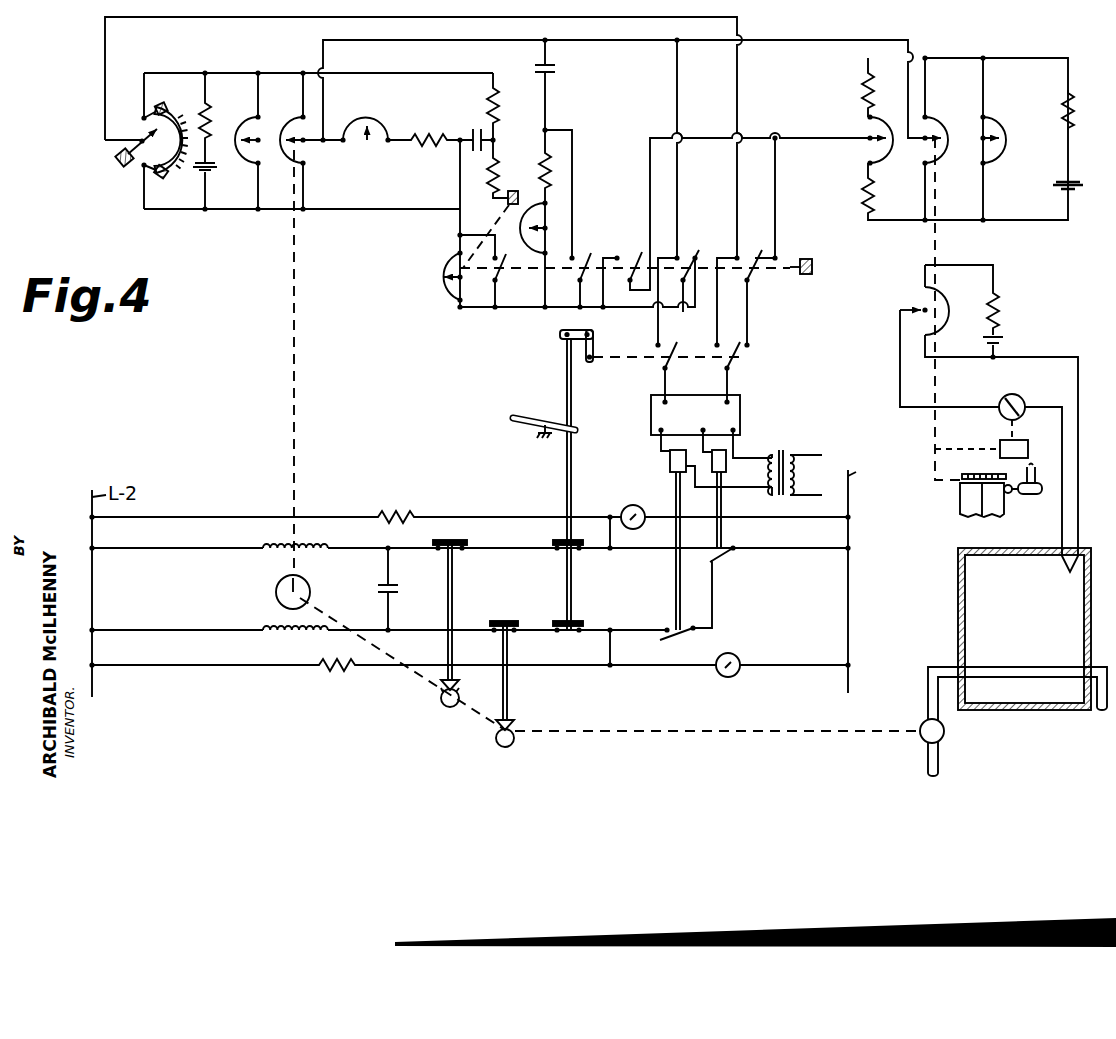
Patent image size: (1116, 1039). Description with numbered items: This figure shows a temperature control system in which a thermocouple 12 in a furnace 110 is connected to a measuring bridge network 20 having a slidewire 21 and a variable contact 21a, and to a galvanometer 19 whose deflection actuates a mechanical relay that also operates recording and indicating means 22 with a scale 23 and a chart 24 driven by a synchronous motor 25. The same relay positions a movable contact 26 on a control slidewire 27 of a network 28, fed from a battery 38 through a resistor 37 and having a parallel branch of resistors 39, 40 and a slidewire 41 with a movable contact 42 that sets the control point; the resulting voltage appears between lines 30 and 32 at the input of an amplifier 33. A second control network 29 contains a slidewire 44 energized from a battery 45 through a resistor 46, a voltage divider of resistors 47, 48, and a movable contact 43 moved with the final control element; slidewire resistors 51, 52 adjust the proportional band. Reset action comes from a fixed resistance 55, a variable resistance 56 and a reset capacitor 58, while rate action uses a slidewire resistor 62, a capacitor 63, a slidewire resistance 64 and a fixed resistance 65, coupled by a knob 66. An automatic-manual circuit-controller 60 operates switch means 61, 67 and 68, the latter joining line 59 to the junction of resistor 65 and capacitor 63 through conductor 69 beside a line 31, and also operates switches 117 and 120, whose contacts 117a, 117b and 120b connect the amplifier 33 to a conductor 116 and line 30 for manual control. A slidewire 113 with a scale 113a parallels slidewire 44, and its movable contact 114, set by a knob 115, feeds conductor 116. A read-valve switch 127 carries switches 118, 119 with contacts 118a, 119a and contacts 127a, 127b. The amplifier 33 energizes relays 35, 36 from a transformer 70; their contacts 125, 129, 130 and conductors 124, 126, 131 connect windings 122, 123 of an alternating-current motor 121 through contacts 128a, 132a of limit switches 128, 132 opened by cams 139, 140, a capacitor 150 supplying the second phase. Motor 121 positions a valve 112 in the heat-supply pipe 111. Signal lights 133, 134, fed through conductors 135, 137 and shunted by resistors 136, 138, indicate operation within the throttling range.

The thermocouple 12 is at (1073, 568).
The galvanometer 19 is at (1022, 398).
The balanceable network 20 is at (1001, 391).
The slidewire 21 is at (946, 304).
The variable contact 21a is at (942, 326).
The recording and indicating means 22 is at (981, 438).
The scale 23 is at (972, 474).
The chart 24 is at (962, 500).
The synchronous motor 25 is at (1038, 482).
The movable contact 26 is at (942, 146).
The control slidewire 27 is at (940, 122).
The network 28 is at (995, 123).
The second control network 29 is at (317, 125).
The line 30 is at (800, 40).
The conductor 31 is at (640, 309).
The line 32 is at (810, 136).
The amplifier 33 is at (695, 415).
The relay 35 is at (670, 461).
The relay 36 is at (727, 452).
The resistor 37 is at (1075, 112).
The battery 38 is at (1073, 180).
The resistor 39 is at (864, 92).
The resistor 40 is at (874, 202).
The slidewire 41 is at (893, 124).
The movable contact 42 is at (878, 142).
The movable contact 43 is at (296, 134).
The slidewire 44 is at (301, 116).
The battery 45 is at (214, 170).
The resistor 46 is at (212, 128).
The resistor 47 is at (499, 92).
The resistor 48 is at (493, 180).
The slidewire resistor 51 is at (1004, 122).
The slidewire resistor 52 is at (252, 122).
The fixed resistance 55 is at (428, 146).
The variable resistance 56 is at (386, 128).
The reset capacitor 58 is at (474, 128).
The line 59 is at (460, 194).
The circuit-controller 60 is at (772, 272).
The switch means 61 is at (587, 252).
The slidewire resistor 62 is at (447, 296).
The capacitor 63 is at (554, 70).
The slidewire resistance 64 is at (532, 202).
The fixed resistance 65 is at (543, 162).
The knob 66 is at (490, 226).
The switch means 67 is at (636, 254).
The third switch means 68 is at (505, 256).
The conductor 69 is at (573, 170).
The transformer 70 is at (790, 452).
The furnace 110 is at (1024, 629).
The pipe 111 is at (928, 771).
The valve 112 is at (922, 726).
The slidewire 113 is at (160, 174).
The scale 113a is at (164, 110).
The movable contact 114 is at (138, 138).
The knob 115 is at (118, 158).
The conductor 116 is at (105, 68).
The switch 117 is at (750, 274).
The conductor 117a is at (764, 258).
The contact 117b is at (740, 254).
The switch 118 is at (742, 360).
The contact 118a is at (742, 346).
The switch means 119 is at (668, 364).
The contact 119a is at (670, 352).
The switch 120 is at (697, 256).
The contact 120b is at (676, 252).
The motor 121 is at (276, 588).
The coil 122 is at (322, 546).
The coil 123 is at (292, 636).
The conductor 124 is at (815, 550).
The contact 125 is at (710, 546).
The conductor 126 is at (665, 550).
The read-valve switch 127 is at (527, 417).
The contacts 127a is at (556, 540).
The contacts 127b is at (571, 632).
The limit switch 128 is at (452, 612).
The contacts 128a is at (443, 540).
The contact 129 is at (716, 558).
The contact 130 is at (665, 626).
The conductor 131 is at (612, 626).
The limit switch 132 is at (510, 688).
The contacts 132a is at (508, 620).
The signal light 133 is at (622, 508).
The signal light 134 is at (736, 676).
The conductor 135 is at (611, 536).
The resistor 136 is at (400, 512).
The conductor 137 is at (611, 650).
The resistor 138 is at (336, 670).
The cam 139 is at (512, 746).
The cam 140 is at (445, 706).
The capacitor 150 is at (399, 590).